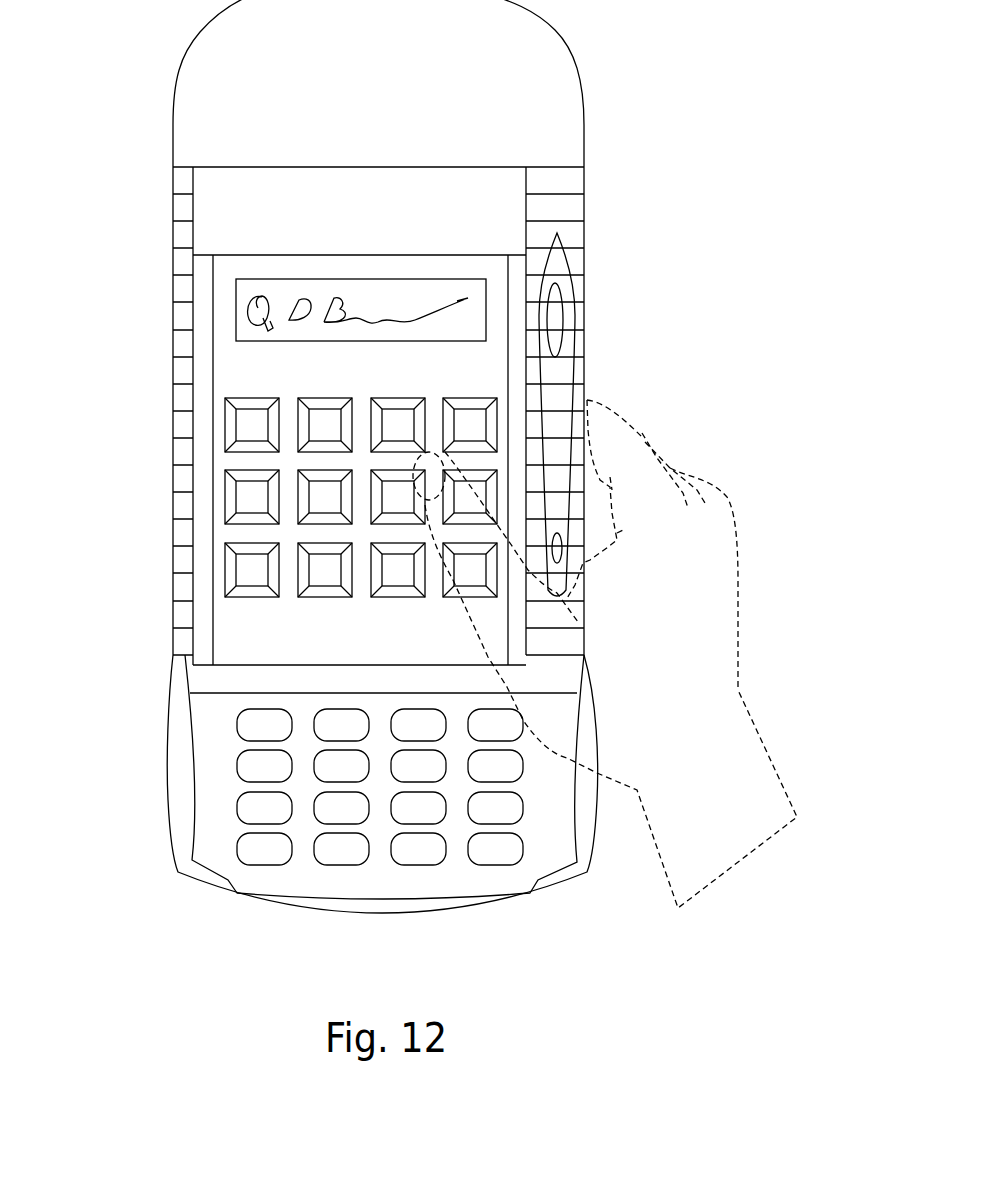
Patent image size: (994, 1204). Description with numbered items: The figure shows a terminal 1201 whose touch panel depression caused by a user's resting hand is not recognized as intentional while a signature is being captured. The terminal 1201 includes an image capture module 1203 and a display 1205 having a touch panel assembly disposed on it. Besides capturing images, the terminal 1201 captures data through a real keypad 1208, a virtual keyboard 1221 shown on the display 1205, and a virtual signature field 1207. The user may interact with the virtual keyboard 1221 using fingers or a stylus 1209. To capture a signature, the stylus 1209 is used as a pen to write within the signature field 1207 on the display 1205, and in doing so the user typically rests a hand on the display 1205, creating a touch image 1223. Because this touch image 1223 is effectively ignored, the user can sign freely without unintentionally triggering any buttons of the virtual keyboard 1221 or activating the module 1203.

The terminal 1201 is at (602, 240).
The image capture module 1203 is at (583, 93).
The display 1205 is at (215, 635).
The virtual signature field 1207 is at (237, 330).
The real keypad 1208 is at (158, 778).
The stylus 1209 is at (575, 377).
The virtual keyboard 1221 is at (227, 435).
The touch image 1223 is at (740, 690).